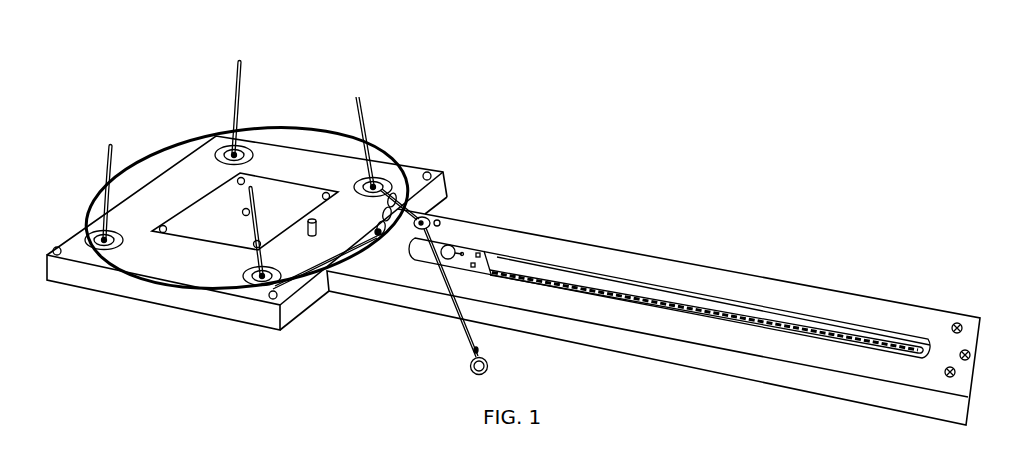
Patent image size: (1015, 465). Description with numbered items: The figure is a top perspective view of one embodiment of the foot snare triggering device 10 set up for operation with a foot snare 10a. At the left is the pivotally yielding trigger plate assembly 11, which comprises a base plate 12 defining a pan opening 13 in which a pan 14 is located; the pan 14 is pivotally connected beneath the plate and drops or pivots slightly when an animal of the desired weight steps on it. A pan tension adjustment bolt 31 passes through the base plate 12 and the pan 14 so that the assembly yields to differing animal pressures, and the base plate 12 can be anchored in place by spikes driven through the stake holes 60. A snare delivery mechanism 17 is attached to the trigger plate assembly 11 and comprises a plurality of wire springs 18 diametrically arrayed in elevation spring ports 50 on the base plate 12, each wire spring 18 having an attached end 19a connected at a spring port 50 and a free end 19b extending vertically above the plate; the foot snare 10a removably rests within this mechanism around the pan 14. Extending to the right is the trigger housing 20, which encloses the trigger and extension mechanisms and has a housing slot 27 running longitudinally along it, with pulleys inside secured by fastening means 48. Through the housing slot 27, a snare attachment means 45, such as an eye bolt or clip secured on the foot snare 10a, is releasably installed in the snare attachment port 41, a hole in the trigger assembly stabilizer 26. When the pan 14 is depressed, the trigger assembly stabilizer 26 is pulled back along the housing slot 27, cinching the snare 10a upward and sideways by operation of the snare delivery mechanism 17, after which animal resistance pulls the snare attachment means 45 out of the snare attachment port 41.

The foot snare triggering device 10 is at (720, 157).
The foot snare 10a is at (467, 327).
The trigger plate assembly 11 is at (277, 105).
The base plate 12 is at (193, 270).
The pan opening 13 is at (220, 220).
The pan 14 is at (228, 227).
The snare delivery mechanism 17 is at (113, 165).
The wire springs 18 is at (235, 84).
The attached end 19a is at (247, 150).
The free end 19b is at (238, 62).
The trigger housing 20 is at (628, 260).
The trigger assembly stabilizer 26 is at (462, 247).
The housing slot 27 is at (795, 322).
The pan tension adjustment bolt 31 is at (322, 227).
The snare attachment port 41 is at (455, 245).
The snare attachment means 45 is at (435, 218).
The fastening means 48 is at (958, 323).
The elevation spring ports 50 is at (90, 247).
The stake holes 60 is at (57, 246).